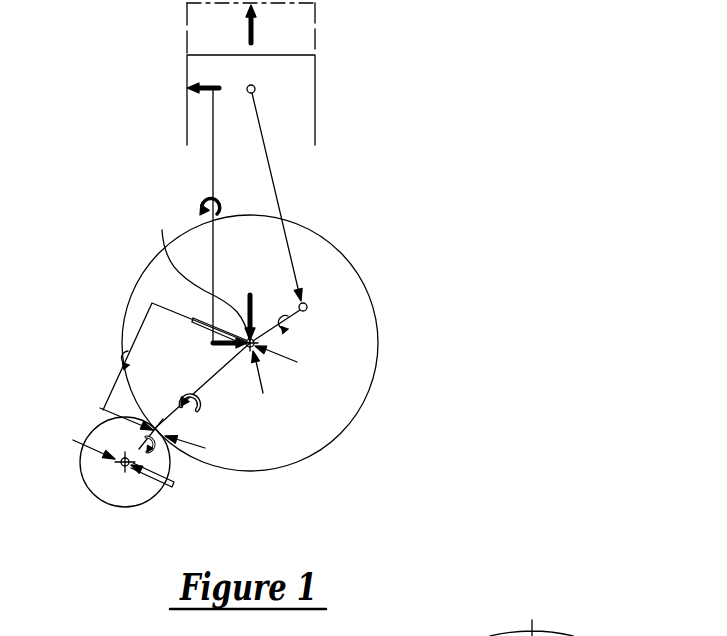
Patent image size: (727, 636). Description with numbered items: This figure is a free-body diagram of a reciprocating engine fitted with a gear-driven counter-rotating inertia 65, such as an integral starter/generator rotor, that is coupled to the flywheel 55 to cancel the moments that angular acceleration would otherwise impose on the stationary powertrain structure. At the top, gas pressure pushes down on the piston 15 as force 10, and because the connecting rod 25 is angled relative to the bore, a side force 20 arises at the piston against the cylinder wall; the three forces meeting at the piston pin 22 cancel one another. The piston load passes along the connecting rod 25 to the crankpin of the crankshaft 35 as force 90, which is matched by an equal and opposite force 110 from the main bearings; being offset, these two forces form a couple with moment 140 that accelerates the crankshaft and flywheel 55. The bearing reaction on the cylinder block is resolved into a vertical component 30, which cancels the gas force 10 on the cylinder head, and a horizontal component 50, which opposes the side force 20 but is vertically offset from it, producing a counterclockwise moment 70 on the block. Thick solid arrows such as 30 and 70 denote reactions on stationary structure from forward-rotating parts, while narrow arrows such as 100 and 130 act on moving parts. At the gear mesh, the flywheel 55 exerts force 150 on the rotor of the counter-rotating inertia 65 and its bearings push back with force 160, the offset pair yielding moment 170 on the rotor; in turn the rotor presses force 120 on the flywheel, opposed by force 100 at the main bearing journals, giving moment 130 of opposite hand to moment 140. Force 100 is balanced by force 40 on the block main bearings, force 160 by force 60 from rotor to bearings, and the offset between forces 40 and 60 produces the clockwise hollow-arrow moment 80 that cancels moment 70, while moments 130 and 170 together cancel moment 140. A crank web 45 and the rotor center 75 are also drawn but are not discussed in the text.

The gas pressure force 10 is at (260, 25).
The piston 15 is at (215, 55).
The side force 20 is at (203, 201).
The piston pin 22 is at (253, 85).
The connecting rod 25 is at (277, 195).
The vertical component 30 is at (251, 309).
The crankshaft 35 is at (304, 311).
The force at crankshaft main bearings 40 is at (210, 324).
The crank web 45 is at (202, 276).
The horizontal component 50 is at (224, 343).
The flywheel 55 is at (362, 277).
The force from rotor to ISG bearings 60 is at (173, 486).
The counter-rotating inertia 65 is at (147, 503).
The moment on cylinder block 70 is at (224, 200).
The balance shaft center 75 is at (112, 474).
The counter-rotating moment 80 is at (200, 414).
The connecting rod force 90 is at (309, 280).
The main bearing journal force 100 is at (291, 361).
The main bearing force 110 is at (262, 384).
The gear force on flywheel 120 is at (114, 411).
The counter moment on flywheel 130 is at (108, 355).
The crankshaft moment 140 is at (280, 312).
The flywheel force on ISG rotor 150 is at (186, 441).
The ISG bearing force on rotor 160 is at (81, 443).
The moment on ISG rotor 170 is at (152, 460).